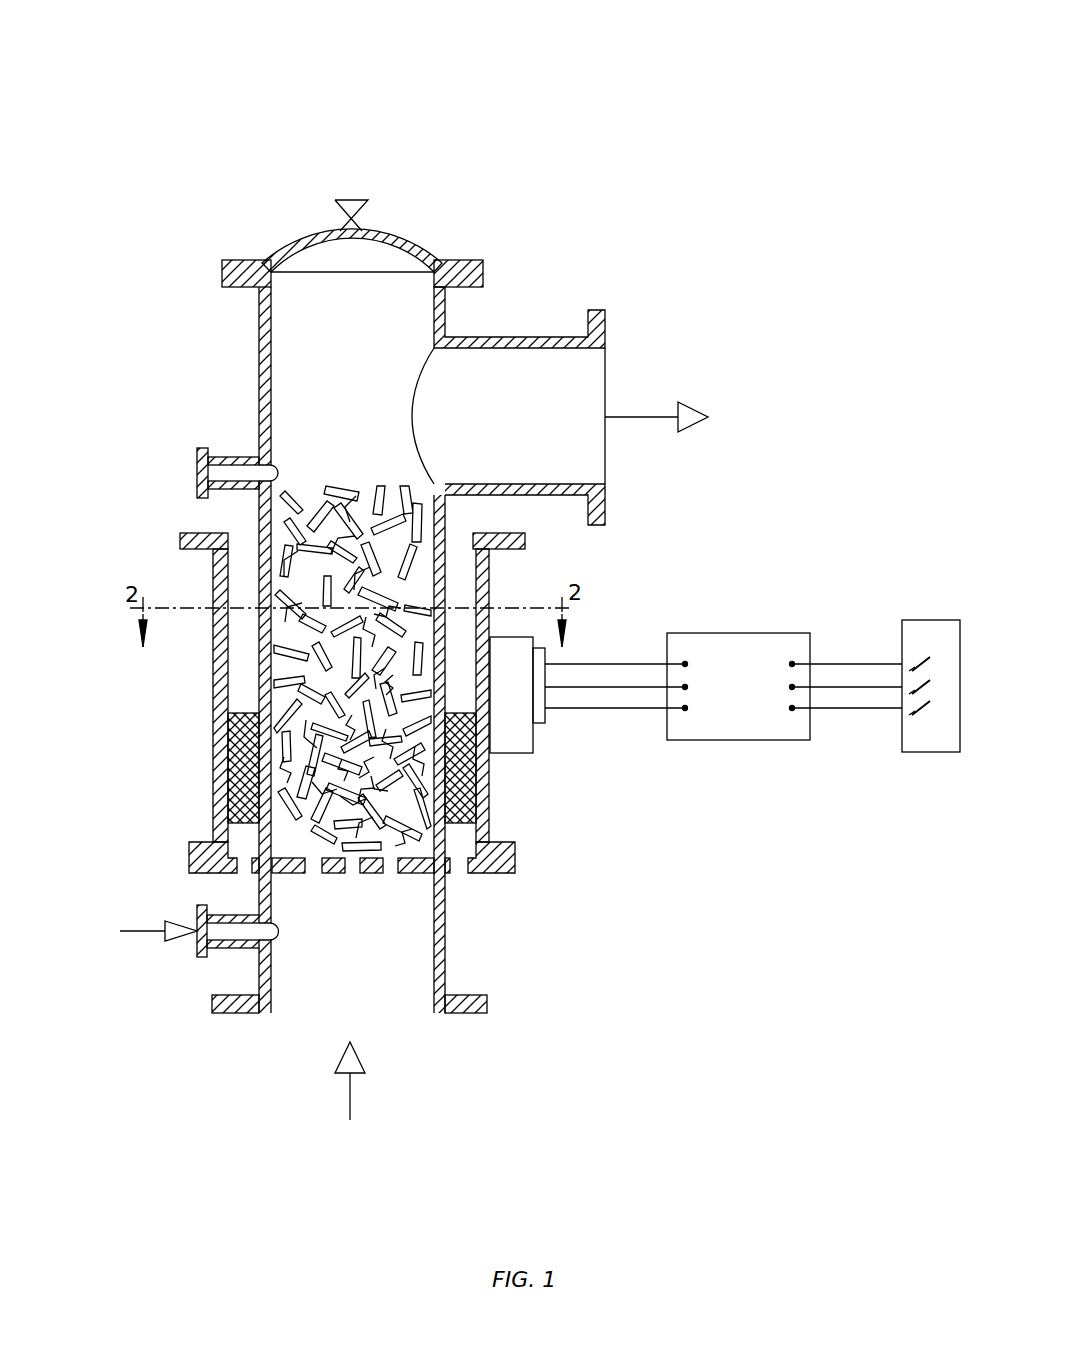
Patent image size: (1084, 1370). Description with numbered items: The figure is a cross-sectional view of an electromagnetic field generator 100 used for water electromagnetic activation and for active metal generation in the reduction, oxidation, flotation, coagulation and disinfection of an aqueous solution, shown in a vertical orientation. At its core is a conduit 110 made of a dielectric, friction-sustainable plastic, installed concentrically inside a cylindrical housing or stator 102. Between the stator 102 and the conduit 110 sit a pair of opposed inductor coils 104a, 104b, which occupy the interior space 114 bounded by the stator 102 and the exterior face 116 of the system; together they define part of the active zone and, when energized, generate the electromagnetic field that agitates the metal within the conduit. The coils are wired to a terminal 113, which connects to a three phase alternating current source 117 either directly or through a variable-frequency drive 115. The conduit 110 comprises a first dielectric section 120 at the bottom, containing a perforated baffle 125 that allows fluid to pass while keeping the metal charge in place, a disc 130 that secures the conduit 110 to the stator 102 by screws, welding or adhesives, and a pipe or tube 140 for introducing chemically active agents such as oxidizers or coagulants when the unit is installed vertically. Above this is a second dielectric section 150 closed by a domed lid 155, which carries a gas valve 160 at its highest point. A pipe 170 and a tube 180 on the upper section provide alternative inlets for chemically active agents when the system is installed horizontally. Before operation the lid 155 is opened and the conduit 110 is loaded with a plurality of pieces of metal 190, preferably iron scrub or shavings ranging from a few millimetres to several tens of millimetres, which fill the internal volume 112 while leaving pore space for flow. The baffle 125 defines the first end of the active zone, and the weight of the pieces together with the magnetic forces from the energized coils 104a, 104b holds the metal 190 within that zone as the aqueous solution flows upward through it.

The electromagnetic field generator 100 is at (252, 82).
The cylindrical housing or stator 102 is at (213, 807).
The inductor coil 104a is at (227, 720).
The inductor coil 104b is at (477, 758).
The conduit 110 is at (263, 685).
The internal volume 112 is at (283, 718).
The terminal 113 is at (517, 685).
The interior space 114 is at (247, 583).
The variable-frequency drive 115 is at (748, 735).
The exterior face 116 is at (213, 555).
The three phase alternating current source 117 is at (928, 742).
The first dielectric section 120 is at (440, 950).
The perforated baffle 125 is at (383, 866).
The disc 130 is at (200, 856).
The pipe or tube 140 is at (200, 955).
The second dielectric section 150 is at (262, 397).
The lid 155 is at (300, 248).
The gas valve 160 is at (355, 205).
The pipe 170 is at (515, 338).
The tube 180 is at (203, 476).
The pieces of metal 190 is at (313, 645).